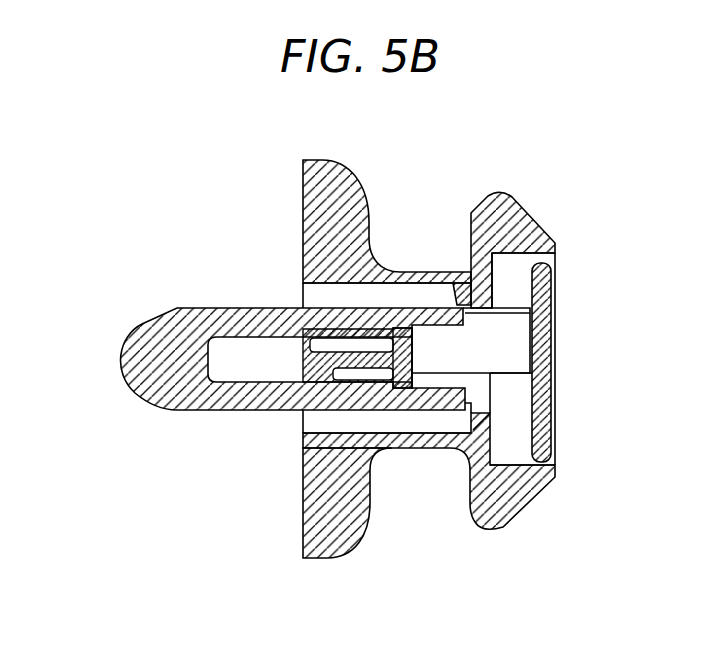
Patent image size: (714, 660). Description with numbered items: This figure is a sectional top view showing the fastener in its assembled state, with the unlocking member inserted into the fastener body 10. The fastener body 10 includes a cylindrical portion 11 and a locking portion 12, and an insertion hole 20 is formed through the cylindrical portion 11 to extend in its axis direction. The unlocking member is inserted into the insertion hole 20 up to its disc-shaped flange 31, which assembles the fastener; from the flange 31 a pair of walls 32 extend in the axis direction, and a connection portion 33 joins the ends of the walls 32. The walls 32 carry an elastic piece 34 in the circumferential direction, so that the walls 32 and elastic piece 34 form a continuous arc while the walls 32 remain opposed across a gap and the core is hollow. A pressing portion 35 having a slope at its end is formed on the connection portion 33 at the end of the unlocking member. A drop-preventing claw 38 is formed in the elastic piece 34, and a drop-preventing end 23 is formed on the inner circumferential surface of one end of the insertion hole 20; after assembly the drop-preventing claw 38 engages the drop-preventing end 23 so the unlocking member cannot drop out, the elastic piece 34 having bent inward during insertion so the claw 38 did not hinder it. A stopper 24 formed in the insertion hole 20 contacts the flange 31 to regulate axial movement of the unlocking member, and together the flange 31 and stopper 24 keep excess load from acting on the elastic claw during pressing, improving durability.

The fastener body 10 is at (349, 387).
The cylindrical portion 11 is at (533, 218).
The locking portion 12 is at (120, 363).
The insertion hole 20 is at (517, 279).
The drop-preventing end 23 is at (470, 293).
The stopper 24 is at (493, 446).
The flange 31 is at (553, 382).
The walls 32 is at (513, 361).
The connection portion 33 is at (395, 346).
The elastic piece 34 is at (520, 301).
The pressing portion 35 is at (303, 356).
The drop-preventing claw 38 is at (447, 286).